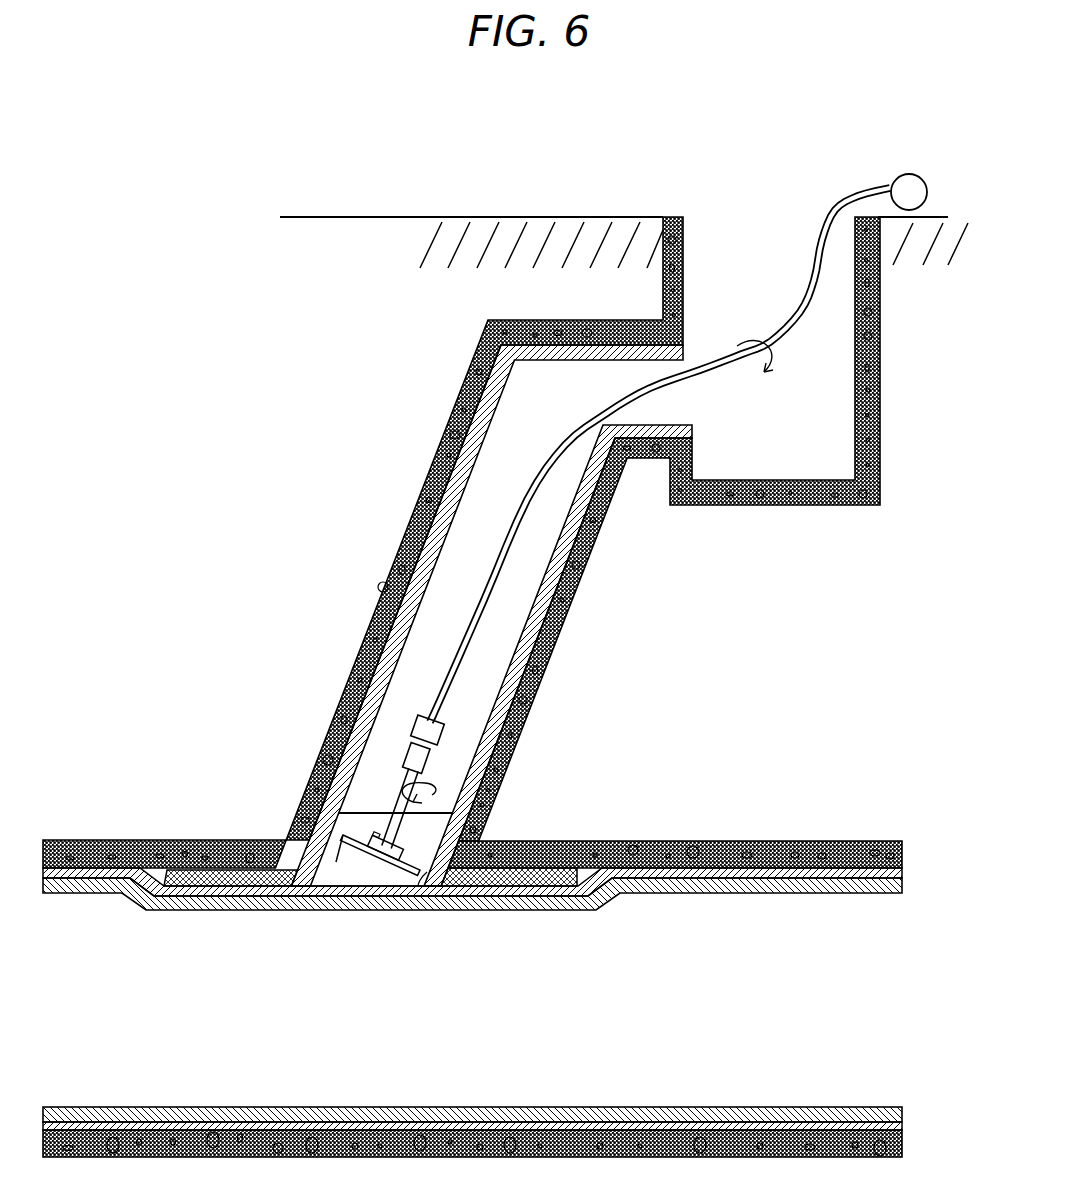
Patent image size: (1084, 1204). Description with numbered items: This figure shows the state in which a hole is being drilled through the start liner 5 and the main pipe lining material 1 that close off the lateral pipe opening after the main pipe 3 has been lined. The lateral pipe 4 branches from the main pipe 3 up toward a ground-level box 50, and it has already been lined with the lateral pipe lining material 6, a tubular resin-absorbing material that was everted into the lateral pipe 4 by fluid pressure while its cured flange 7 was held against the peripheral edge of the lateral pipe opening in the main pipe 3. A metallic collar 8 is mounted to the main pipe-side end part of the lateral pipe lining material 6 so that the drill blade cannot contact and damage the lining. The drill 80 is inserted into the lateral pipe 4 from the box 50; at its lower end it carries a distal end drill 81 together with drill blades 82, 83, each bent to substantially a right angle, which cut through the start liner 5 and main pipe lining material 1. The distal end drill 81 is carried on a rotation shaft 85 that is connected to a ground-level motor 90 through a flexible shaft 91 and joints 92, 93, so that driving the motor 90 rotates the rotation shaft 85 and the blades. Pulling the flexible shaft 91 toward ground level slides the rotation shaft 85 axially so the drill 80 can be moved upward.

The main pipe lining material 1 is at (757, 890).
The main pipe 3 is at (655, 843).
The lateral pipe 4 is at (410, 520).
The start liner 5 is at (90, 850).
The lateral pipe lining material 6 is at (545, 600).
The flange 7 is at (527, 862).
The metallic collar 8 is at (462, 830).
The ground-level box 50 is at (728, 248).
The drill 80 is at (404, 923).
The distal end drill 81 is at (378, 870).
The drill blade 82 is at (342, 856).
The drill blade 83 is at (427, 882).
The rotation shaft 85 is at (397, 800).
The motor 90 is at (905, 172).
The flexible shaft 91 is at (797, 312).
The joint 92 is at (441, 735).
The joint 93 is at (430, 762).